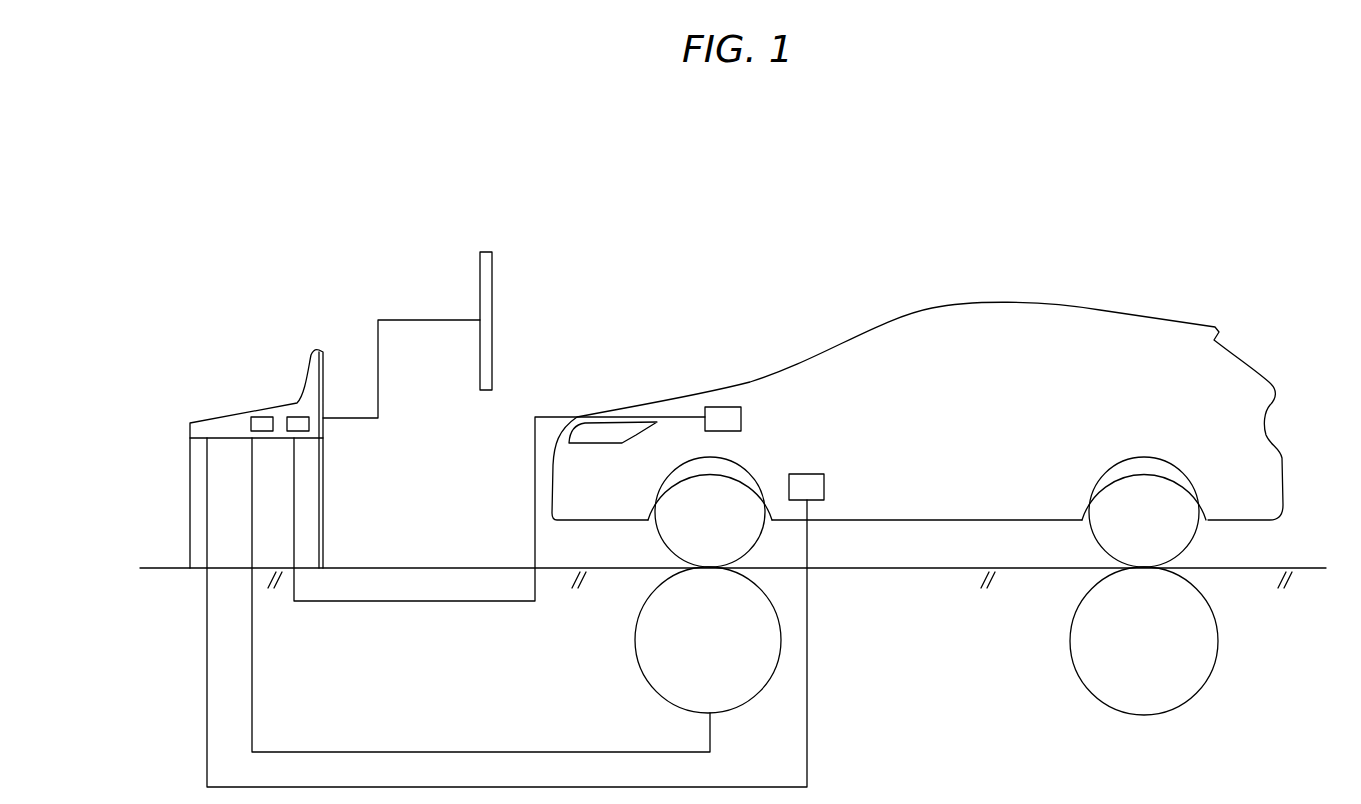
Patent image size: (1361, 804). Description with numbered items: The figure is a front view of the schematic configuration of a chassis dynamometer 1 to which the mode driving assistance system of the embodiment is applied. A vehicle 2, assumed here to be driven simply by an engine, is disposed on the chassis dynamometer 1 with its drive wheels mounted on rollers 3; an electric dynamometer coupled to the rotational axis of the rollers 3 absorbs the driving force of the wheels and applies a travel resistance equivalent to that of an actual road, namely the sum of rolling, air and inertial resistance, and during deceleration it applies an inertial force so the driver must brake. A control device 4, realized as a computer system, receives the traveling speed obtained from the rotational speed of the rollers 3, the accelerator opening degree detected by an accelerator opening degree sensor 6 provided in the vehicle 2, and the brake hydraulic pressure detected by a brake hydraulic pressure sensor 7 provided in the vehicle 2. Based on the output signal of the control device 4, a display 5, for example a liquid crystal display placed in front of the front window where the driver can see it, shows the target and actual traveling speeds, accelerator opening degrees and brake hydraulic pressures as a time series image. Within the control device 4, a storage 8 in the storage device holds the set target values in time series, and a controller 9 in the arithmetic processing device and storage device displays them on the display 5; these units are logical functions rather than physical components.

The chassis dynamometer 1 is at (1282, 534).
The vehicle 2 is at (1104, 276).
The rollers 3 is at (635, 645).
The control device 4 is at (186, 404).
The display 5 is at (480, 263).
The accelerator opening degree sensor 6 is at (825, 486).
The brake hydraulic pressure sensor 7 is at (723, 406).
The storage 8 is at (298, 417).
The controller 9 is at (263, 417).